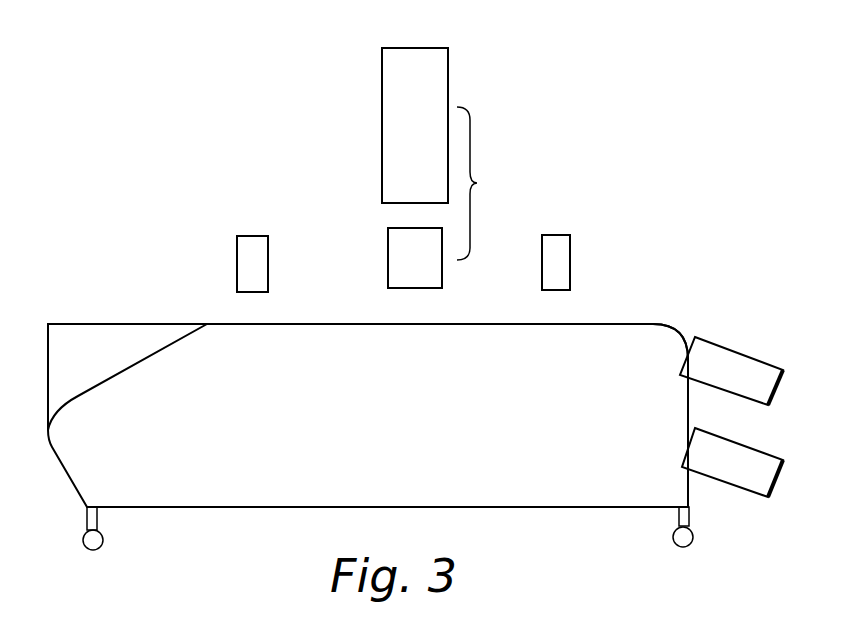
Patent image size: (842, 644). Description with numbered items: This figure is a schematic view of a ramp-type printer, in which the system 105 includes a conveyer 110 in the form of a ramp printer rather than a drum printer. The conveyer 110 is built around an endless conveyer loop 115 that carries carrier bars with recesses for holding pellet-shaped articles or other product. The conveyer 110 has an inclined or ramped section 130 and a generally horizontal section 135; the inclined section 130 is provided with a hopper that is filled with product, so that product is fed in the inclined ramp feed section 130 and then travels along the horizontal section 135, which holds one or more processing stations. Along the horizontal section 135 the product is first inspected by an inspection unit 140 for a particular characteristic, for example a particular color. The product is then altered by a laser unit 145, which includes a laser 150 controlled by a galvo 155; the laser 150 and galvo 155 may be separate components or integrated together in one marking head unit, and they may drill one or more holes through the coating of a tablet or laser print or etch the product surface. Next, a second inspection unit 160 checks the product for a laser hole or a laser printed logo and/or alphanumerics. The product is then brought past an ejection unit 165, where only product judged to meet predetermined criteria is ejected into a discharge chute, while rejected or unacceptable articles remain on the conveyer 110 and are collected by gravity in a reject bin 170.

The system 105 is at (137, 92).
The conveyer 110 is at (143, 270).
The endless conveyer loop 115 is at (610, 321).
The inclined section 130 is at (124, 372).
The horizontal section 135 is at (425, 323).
The inspection unit 140 is at (262, 250).
The laser unit 145 is at (489, 183).
The laser 150 is at (398, 137).
The galvo 155 is at (398, 267).
The inspection unit 160 is at (560, 258).
The ejection unit 165 is at (716, 384).
The reject bin 170 is at (716, 475).